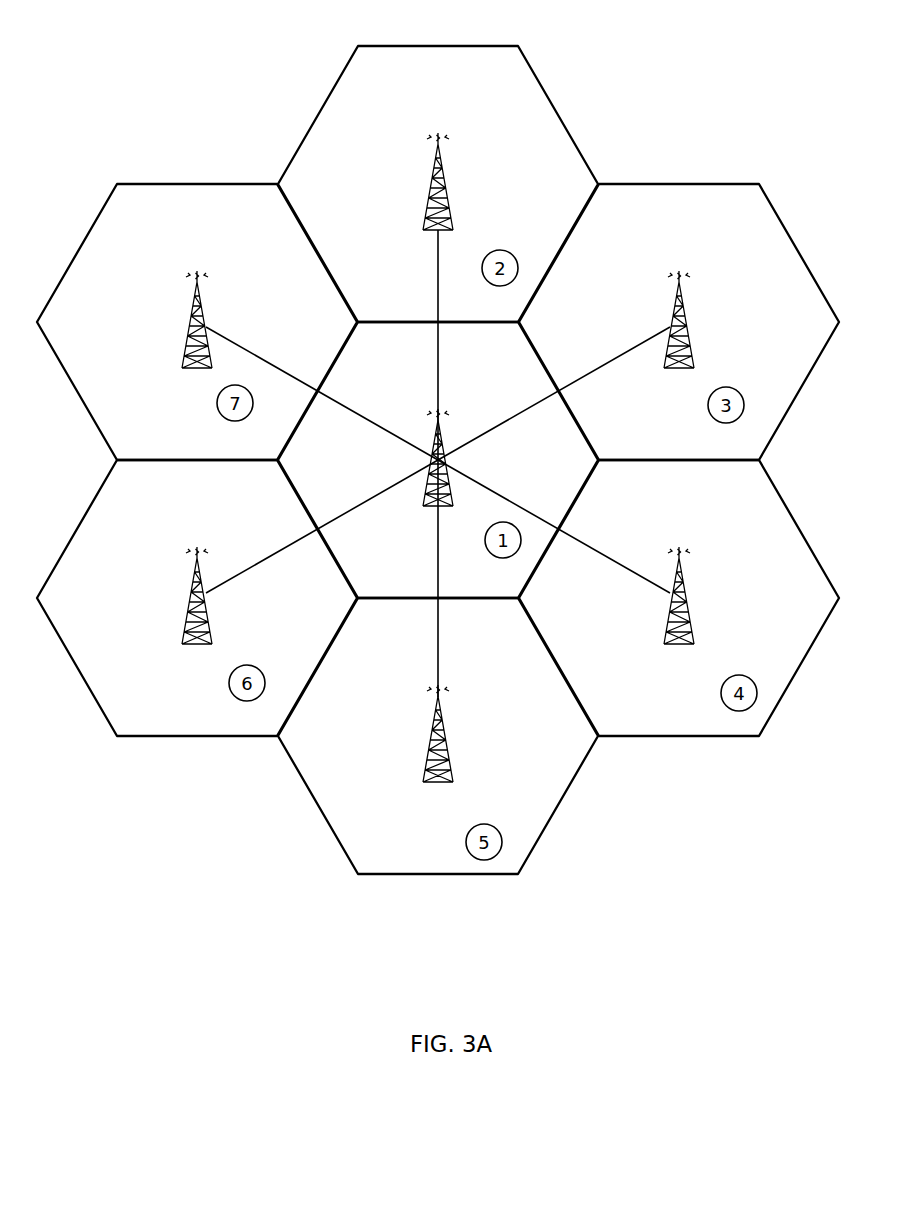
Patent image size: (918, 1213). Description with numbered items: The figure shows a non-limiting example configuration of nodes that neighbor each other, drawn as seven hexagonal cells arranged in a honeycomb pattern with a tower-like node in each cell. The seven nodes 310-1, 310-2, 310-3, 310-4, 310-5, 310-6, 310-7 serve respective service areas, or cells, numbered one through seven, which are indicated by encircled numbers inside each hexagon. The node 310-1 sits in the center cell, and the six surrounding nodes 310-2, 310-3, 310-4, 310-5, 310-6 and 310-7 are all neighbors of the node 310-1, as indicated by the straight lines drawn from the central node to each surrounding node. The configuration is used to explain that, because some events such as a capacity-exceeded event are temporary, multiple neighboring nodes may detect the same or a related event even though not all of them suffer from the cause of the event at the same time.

The node 310-1 is at (447, 445).
The node 310-2 is at (447, 169).
The node 310-3 is at (688, 307).
The node 310-4 is at (688, 583).
The node 310-5 is at (447, 721).
The node 310-6 is at (206, 583).
The node 310-7 is at (206, 307).